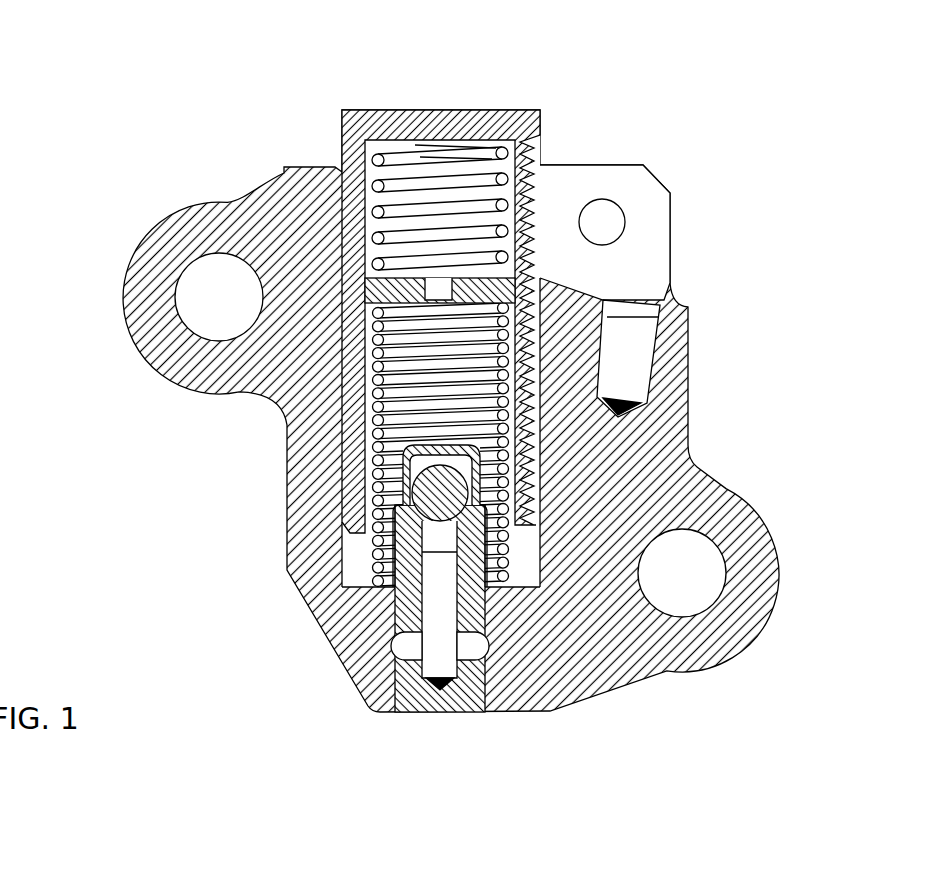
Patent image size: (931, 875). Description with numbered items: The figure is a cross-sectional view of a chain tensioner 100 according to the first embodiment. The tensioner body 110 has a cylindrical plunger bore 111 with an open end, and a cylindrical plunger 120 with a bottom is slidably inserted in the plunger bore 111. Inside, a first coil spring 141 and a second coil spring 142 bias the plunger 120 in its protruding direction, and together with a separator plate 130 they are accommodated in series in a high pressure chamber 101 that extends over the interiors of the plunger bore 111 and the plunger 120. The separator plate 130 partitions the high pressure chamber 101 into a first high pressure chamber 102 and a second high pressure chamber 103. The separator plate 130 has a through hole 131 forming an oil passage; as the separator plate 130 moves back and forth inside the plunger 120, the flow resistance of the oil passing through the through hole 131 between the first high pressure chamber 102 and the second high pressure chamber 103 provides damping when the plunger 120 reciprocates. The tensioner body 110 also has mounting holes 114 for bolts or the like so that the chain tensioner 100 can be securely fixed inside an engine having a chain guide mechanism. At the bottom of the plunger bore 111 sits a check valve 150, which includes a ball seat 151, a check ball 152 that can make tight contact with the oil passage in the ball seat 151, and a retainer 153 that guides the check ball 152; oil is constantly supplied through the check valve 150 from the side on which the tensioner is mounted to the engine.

The chain tensioner 100 is at (447, 360).
The high pressure chamber 101 is at (597, 366).
The first high pressure chamber 102 is at (462, 373).
The second high pressure chamber 103 is at (460, 212).
The tensioner body 110 is at (305, 595).
The plunger bore 111 is at (358, 547).
The mounting holes 114 is at (212, 291).
The plunger 120 is at (388, 108).
The separator plate 130 is at (361, 207).
The through hole 131 is at (437, 283).
The first coil spring 141 is at (510, 418).
The second coil spring 142 is at (523, 165).
The check valve 150 is at (298, 502).
The ball seat 151 is at (395, 522).
The check ball 152 is at (392, 492).
The retainer 153 is at (402, 452).